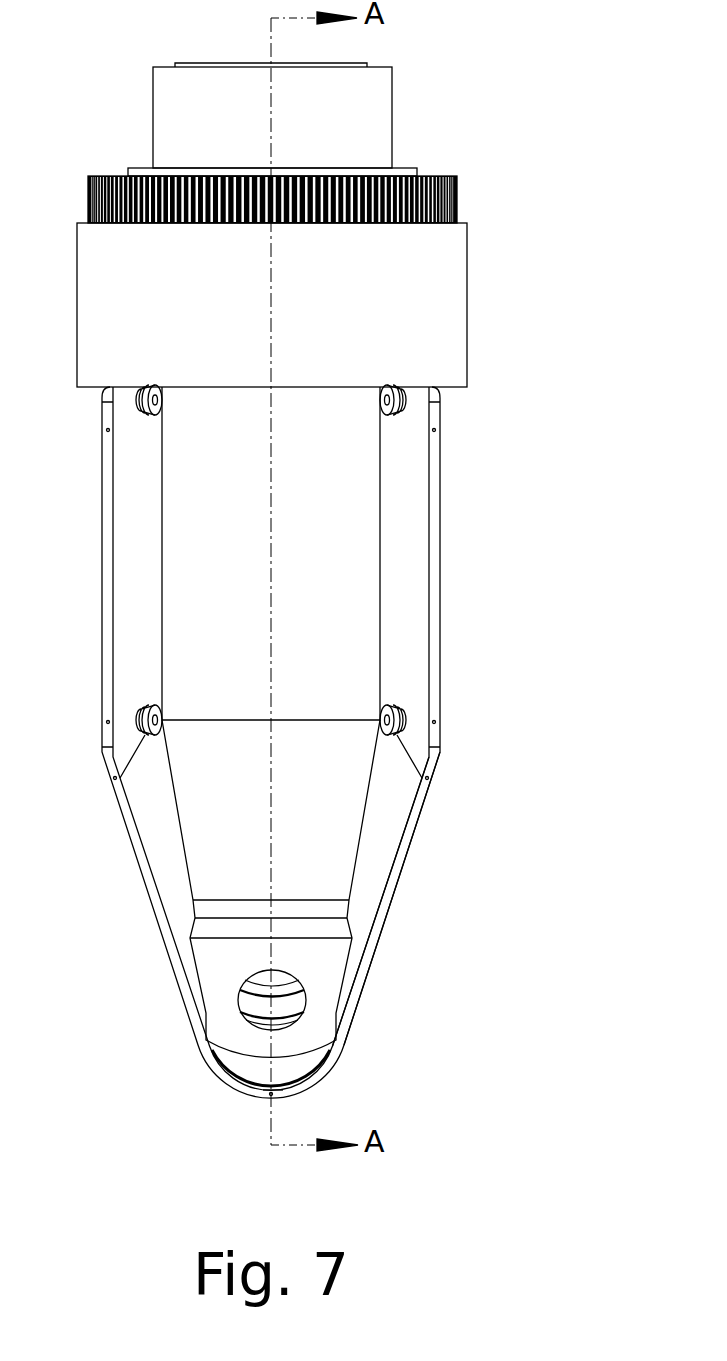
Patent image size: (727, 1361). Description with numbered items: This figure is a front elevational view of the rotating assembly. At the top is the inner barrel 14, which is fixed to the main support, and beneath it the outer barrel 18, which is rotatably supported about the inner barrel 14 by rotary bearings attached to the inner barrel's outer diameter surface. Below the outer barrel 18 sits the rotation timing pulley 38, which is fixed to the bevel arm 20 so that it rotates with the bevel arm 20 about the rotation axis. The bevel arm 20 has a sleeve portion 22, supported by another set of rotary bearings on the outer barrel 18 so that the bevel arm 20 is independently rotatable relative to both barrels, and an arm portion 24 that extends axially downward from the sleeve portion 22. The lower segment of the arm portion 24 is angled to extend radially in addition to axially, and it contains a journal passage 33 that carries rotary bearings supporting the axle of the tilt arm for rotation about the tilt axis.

The inner barrel 14 is at (385, 112).
The outer barrel 18 is at (140, 168).
The rotation timing pulley 38 is at (457, 197).
The sleeve portion 22 is at (242, 321).
The bevel arm 20 is at (462, 637).
The arm portion 24 is at (402, 860).
The journal passage 33 is at (292, 1001).